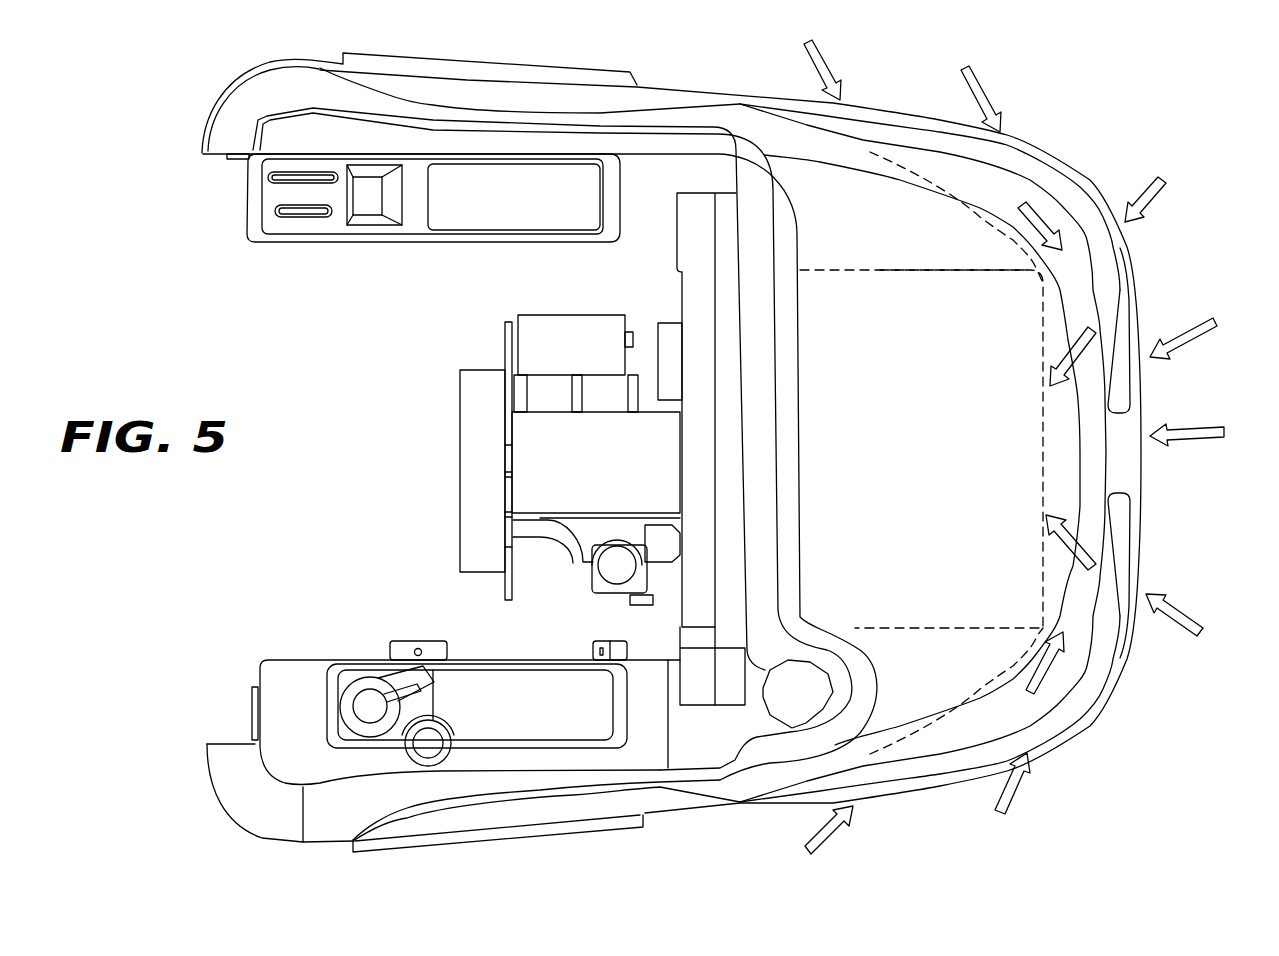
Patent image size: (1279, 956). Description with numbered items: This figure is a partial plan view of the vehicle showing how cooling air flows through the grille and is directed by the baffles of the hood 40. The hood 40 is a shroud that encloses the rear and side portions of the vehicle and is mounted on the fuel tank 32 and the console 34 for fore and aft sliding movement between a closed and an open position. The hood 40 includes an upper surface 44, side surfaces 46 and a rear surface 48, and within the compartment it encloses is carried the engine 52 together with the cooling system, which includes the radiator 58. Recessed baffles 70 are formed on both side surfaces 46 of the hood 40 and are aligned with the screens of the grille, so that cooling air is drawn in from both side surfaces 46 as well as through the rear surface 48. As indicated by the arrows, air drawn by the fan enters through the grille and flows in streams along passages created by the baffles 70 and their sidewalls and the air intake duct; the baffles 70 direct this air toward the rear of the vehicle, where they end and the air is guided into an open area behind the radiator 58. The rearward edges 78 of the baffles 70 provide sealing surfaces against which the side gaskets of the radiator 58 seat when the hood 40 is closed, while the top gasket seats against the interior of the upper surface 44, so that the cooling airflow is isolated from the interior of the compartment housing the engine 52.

The fuel tank 32 is at (697, 752).
The console 34 is at (423, 213).
The hood 40 is at (1187, 457).
The upper surface 44 is at (926, 458).
The side surfaces 46 is at (353, 100).
The rear surface 48 is at (1120, 430).
The engine 52 is at (617, 478).
The radiator 58 is at (905, 270).
The baffles 70 is at (867, 147).
The rearward edges 78 is at (970, 205).